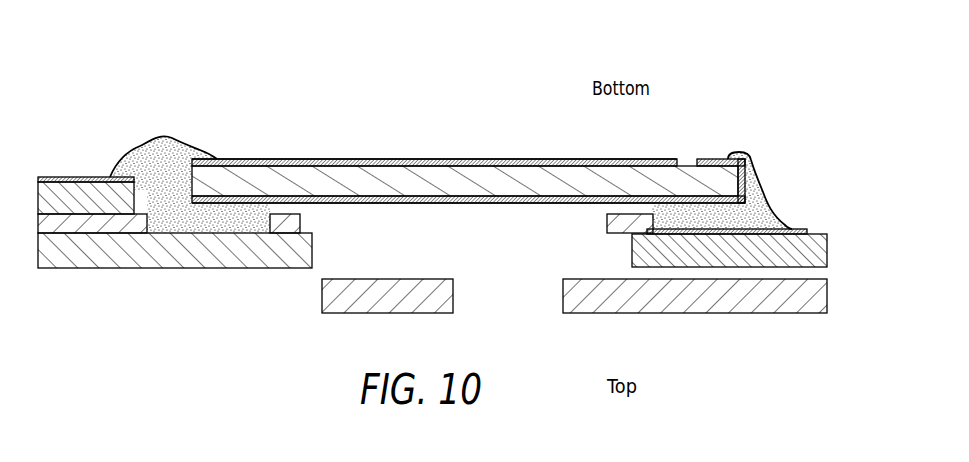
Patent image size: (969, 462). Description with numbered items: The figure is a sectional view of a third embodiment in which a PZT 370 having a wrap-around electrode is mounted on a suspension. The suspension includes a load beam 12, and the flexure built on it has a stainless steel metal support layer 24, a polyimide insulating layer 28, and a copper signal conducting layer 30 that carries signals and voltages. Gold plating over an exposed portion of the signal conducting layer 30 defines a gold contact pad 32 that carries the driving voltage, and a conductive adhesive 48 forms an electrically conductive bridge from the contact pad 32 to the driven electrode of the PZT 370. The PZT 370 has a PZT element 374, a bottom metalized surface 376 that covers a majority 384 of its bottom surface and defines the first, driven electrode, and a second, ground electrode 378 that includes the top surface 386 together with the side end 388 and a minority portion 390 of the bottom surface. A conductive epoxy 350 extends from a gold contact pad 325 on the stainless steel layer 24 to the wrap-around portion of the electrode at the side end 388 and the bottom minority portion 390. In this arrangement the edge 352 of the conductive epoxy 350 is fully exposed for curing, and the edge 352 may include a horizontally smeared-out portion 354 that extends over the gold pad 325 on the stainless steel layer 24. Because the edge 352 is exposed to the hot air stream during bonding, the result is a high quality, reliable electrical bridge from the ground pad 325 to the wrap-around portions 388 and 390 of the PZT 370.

The load beam 12 is at (340, 300).
The metal support layer 24 is at (443, 285).
The insulating layer 28 is at (50, 223).
The signal conducting layer 30 is at (48, 193).
The gold contact pad 32 is at (68, 177).
The conductive adhesive 48 is at (167, 147).
The gold contact pad 325 is at (803, 231).
The conductive epoxy 350 is at (757, 167).
The edge 352 is at (765, 190).
The horizontally smeared-out portion 354 is at (780, 228).
The PZT 370 is at (485, 128).
The PZT element 374 is at (550, 187).
The bottom metalized surface 376 is at (473, 162).
The ground electrode 378 is at (508, 205).
The majority of bottom surface 384 is at (347, 158).
The top surface 386 is at (357, 205).
The side end 388 is at (756, 163).
The minority portion of bottom surface 390 is at (710, 160).